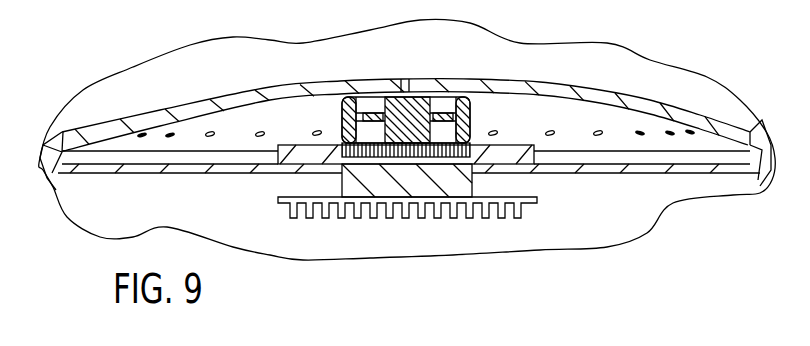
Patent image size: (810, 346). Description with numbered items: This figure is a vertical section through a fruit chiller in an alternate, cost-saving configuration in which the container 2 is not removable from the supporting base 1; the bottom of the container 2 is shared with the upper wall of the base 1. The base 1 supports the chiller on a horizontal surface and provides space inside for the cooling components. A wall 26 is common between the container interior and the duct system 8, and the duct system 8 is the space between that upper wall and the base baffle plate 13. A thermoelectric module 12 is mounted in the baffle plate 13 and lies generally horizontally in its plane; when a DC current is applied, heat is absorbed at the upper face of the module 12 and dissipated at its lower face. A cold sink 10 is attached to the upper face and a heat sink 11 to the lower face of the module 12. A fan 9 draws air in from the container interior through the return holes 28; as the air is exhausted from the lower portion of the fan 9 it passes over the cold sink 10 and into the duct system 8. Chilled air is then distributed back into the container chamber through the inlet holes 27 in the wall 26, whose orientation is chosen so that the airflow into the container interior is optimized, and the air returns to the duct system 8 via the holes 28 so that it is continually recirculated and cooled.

The supporting base 1 is at (759, 177).
The container 2 is at (760, 128).
The duct system 8 is at (298, 117).
The fan 9 is at (471, 115).
The cold sink 10 is at (522, 157).
The heat sink 11 is at (524, 206).
The thermoelectric module 12 is at (413, 184).
The base baffle plate 13 is at (193, 174).
The wall 26 is at (197, 93).
The inlet holes 27 is at (137, 135).
The holes 28 is at (406, 78).